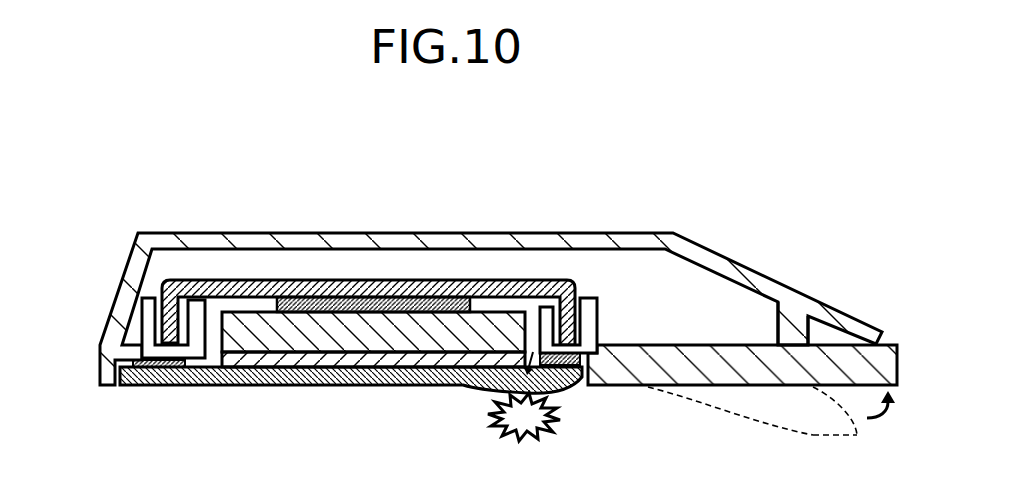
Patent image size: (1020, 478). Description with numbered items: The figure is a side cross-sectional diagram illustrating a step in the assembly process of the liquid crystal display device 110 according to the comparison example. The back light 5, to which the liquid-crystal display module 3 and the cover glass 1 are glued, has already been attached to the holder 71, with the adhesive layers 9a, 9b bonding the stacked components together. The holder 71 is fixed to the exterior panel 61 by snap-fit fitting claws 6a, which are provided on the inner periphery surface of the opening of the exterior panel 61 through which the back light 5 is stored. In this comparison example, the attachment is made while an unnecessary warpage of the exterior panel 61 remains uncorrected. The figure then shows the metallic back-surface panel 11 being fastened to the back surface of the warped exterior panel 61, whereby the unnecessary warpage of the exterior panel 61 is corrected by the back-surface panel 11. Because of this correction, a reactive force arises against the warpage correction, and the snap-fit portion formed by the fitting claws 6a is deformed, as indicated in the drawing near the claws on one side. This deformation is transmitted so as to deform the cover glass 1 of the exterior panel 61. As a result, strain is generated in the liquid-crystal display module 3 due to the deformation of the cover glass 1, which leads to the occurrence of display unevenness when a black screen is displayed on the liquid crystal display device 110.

The liquid crystal display device 110 is at (468, 157).
The exterior panel 61 is at (100, 360).
The back-surface panel 11 is at (797, 302).
The holder 71 is at (290, 282).
The adhesive layer 9a is at (371, 300).
The snap-fit fitting claws 6a is at (169, 298).
The back light 5 is at (465, 343).
The liquid-crystal display module 3 is at (362, 358).
The cover glass 1 is at (288, 380).
The adhesive layer 9b is at (160, 372).